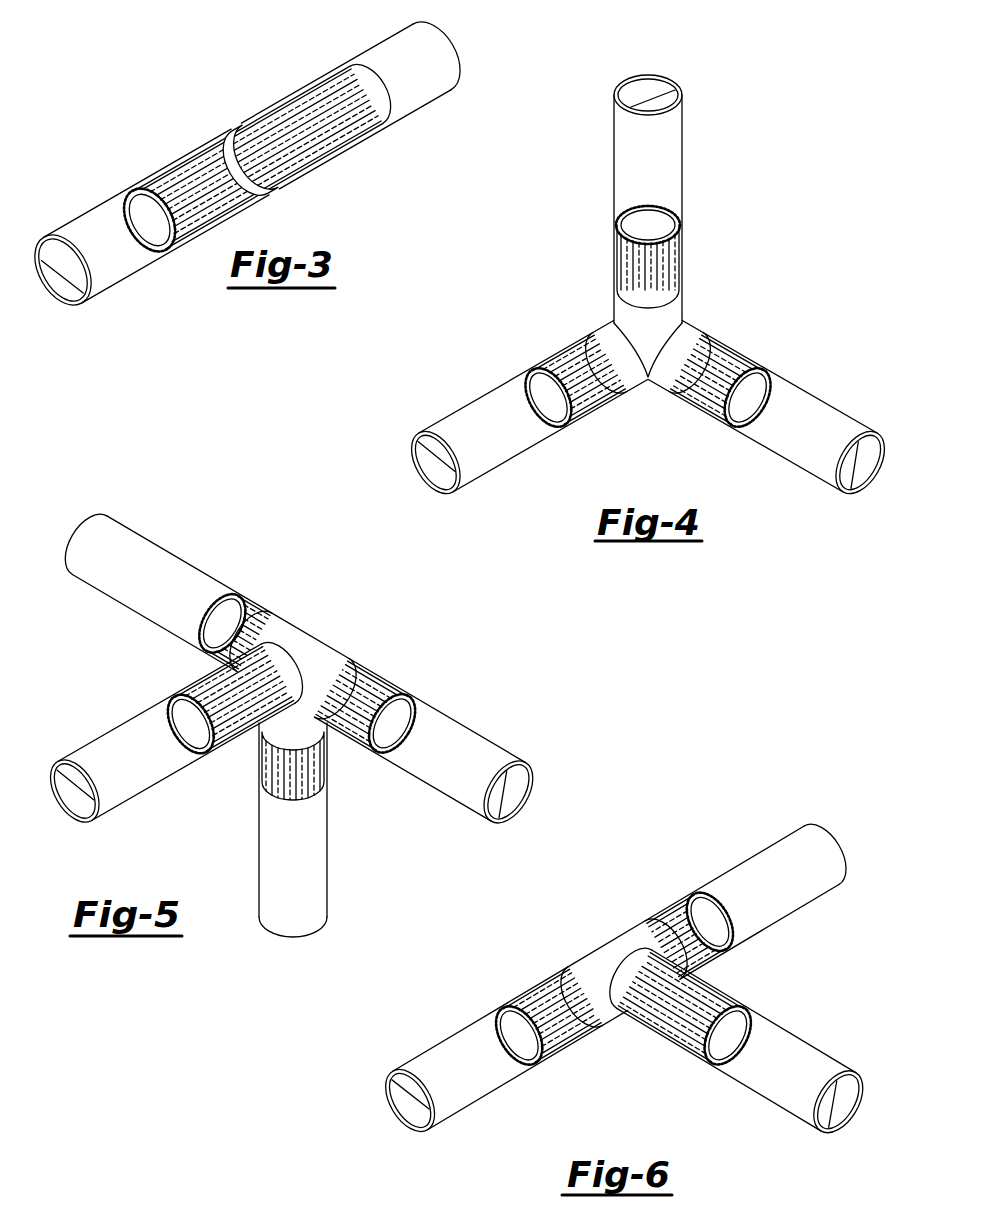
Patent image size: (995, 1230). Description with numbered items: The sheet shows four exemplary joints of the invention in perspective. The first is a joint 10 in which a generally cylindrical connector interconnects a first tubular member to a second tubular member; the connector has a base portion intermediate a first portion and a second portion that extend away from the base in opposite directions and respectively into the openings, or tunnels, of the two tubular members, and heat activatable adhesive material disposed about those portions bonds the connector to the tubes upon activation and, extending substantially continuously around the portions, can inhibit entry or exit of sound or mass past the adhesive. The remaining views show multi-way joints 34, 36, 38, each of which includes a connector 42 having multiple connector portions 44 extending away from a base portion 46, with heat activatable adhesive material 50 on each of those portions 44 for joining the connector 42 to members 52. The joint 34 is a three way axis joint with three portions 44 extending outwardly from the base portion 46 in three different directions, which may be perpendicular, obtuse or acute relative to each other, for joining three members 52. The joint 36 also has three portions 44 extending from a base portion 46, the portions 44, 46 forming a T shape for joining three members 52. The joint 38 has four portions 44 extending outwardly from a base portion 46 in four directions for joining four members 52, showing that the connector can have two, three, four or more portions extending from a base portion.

In FIG. 3, the joint 10 is at (232, 98).
In FIG. 4, the joint 34 is at (687, 70).
In FIG. 6, the joint 36 is at (560, 900).
In FIG. 5, the joint 38 is at (359, 590).
In FIG. 4, the connector 42 is at (704, 289).
In FIG. 5, the connector 42 is at (344, 628).
In FIG. 6, the connector 42 is at (571, 941).
In FIG. 4, the connector portions 44 is at (677, 210).
In FIG. 5, the connector portions 44 is at (203, 590).
In FIG. 6, the connector portions 44 is at (713, 903).
In FIG. 4, the base portion 46 is at (668, 314).
In FIG. 5, the base portion 46 is at (293, 632).
In FIG. 6, the base portion 46 is at (623, 943).
In FIG. 4, the heat activatable adhesive material 50 is at (625, 262).
In FIG. 5, the heat activatable adhesive material 50 is at (242, 587).
In FIG. 6, the heat activatable adhesive material 50 is at (673, 902).
In FIG. 4, the members 52 is at (626, 134).
In FIG. 5, the members 52 is at (104, 533).
In FIG. 6, the members 52 is at (811, 847).